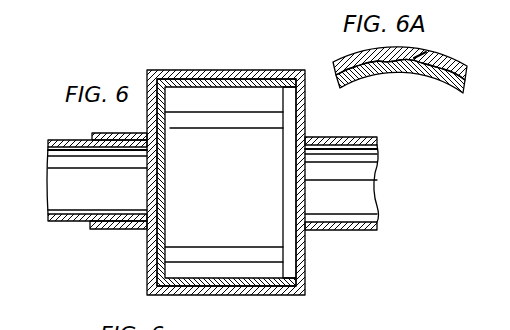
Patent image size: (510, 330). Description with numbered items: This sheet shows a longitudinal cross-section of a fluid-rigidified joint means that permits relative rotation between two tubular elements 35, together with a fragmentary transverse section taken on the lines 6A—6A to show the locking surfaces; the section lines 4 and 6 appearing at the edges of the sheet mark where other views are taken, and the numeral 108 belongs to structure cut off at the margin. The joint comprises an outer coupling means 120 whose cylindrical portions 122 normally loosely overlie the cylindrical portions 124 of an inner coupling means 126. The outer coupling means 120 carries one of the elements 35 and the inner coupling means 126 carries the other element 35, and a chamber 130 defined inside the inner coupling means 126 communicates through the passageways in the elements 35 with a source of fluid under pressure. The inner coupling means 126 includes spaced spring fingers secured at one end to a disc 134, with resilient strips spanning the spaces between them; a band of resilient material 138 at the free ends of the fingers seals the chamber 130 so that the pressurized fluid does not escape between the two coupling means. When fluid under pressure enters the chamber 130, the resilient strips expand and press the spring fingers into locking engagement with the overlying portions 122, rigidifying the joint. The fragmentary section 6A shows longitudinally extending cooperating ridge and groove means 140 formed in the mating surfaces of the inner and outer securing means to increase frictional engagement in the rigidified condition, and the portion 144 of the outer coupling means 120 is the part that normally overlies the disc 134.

In FIG. 6, the section line 4 is at (147, 5).
In FIG. 6, the section line 6 is at (0, 178).
In FIG. 6, the section line 6A is at (252, 77).
In FIG. 6, the element 35 is at (66, 222).
In FIG. 6, the adjacent structure 108 is at (0, 10).
In FIG. 6, the outer coupling means 120 is at (140, 255).
In FIG. 6, the cylindrical portions 122 is at (263, 295).
In FIG. 6A, the cylindrical portions 122 is at (348, 62).
In FIG. 6, the cylindrical portions 124 is at (228, 280).
In FIG. 6A, the cylindrical portions 124 is at (395, 76).
In FIG. 6, the inner coupling means 126 is at (181, 126).
In FIG. 6, the chamber 130 is at (236, 193).
In FIG. 6, the disc 134 is at (163, 242).
In FIG. 6, the band of resilient material 138 is at (297, 282).
In FIG. 6A, the ridge and groove means 140 is at (420, 56).
In FIG. 6, the portion 144 is at (150, 276).